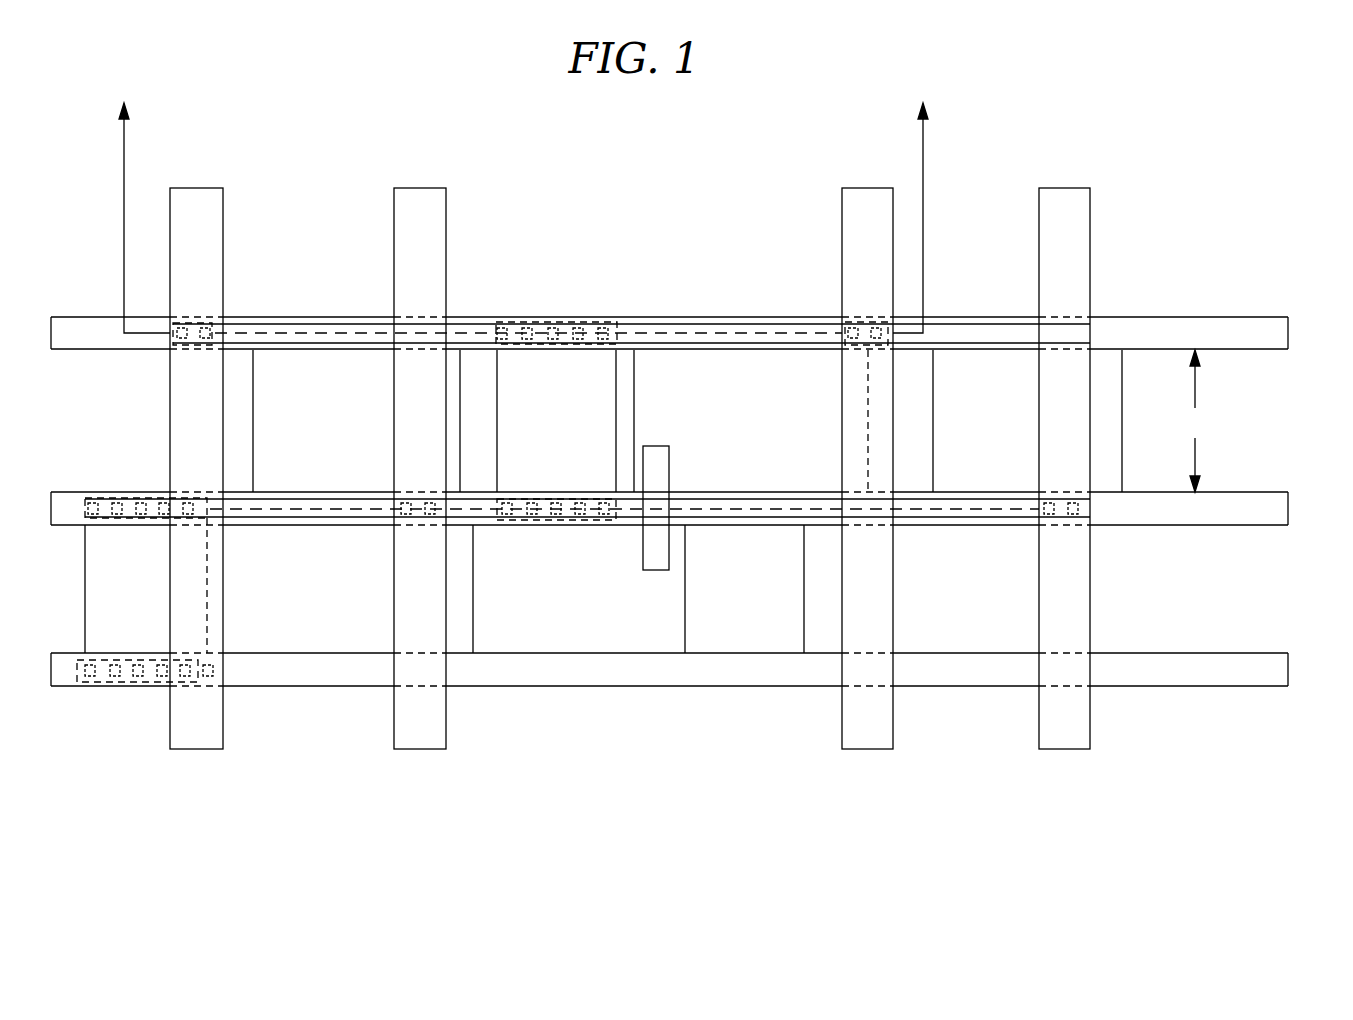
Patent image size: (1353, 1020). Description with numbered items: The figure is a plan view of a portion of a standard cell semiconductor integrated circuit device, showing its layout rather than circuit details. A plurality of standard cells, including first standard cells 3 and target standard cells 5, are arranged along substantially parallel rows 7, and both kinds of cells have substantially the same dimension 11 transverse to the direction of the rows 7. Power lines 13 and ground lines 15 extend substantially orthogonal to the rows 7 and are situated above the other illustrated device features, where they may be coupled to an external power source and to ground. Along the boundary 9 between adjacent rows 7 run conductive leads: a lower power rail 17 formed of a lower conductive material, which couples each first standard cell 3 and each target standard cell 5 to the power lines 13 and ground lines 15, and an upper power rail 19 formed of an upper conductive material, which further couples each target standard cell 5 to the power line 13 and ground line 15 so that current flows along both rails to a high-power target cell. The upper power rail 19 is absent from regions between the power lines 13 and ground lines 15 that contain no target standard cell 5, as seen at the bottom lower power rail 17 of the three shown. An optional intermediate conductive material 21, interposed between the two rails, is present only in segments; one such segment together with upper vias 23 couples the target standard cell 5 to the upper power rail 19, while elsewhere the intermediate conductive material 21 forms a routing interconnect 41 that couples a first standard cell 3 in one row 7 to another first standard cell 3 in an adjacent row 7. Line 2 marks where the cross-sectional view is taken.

The line 2- 2 is at (524, 202).
The first standard cell 3 is at (687, 501).
The target standard cell 5 is at (350, 501).
The row 7 is at (1272, 411).
The boundary 9 is at (1302, 510).
The dimension 11 is at (1194, 421).
The power line 13 is at (193, 752).
The ground line 15 is at (418, 752).
The lower power rail 17 is at (1248, 334).
The upper power rail 19 is at (291, 330).
The intermediate conductive material 21 is at (527, 330).
The upper via 23 is at (583, 330).
The routing interconnect 41 is at (657, 447).